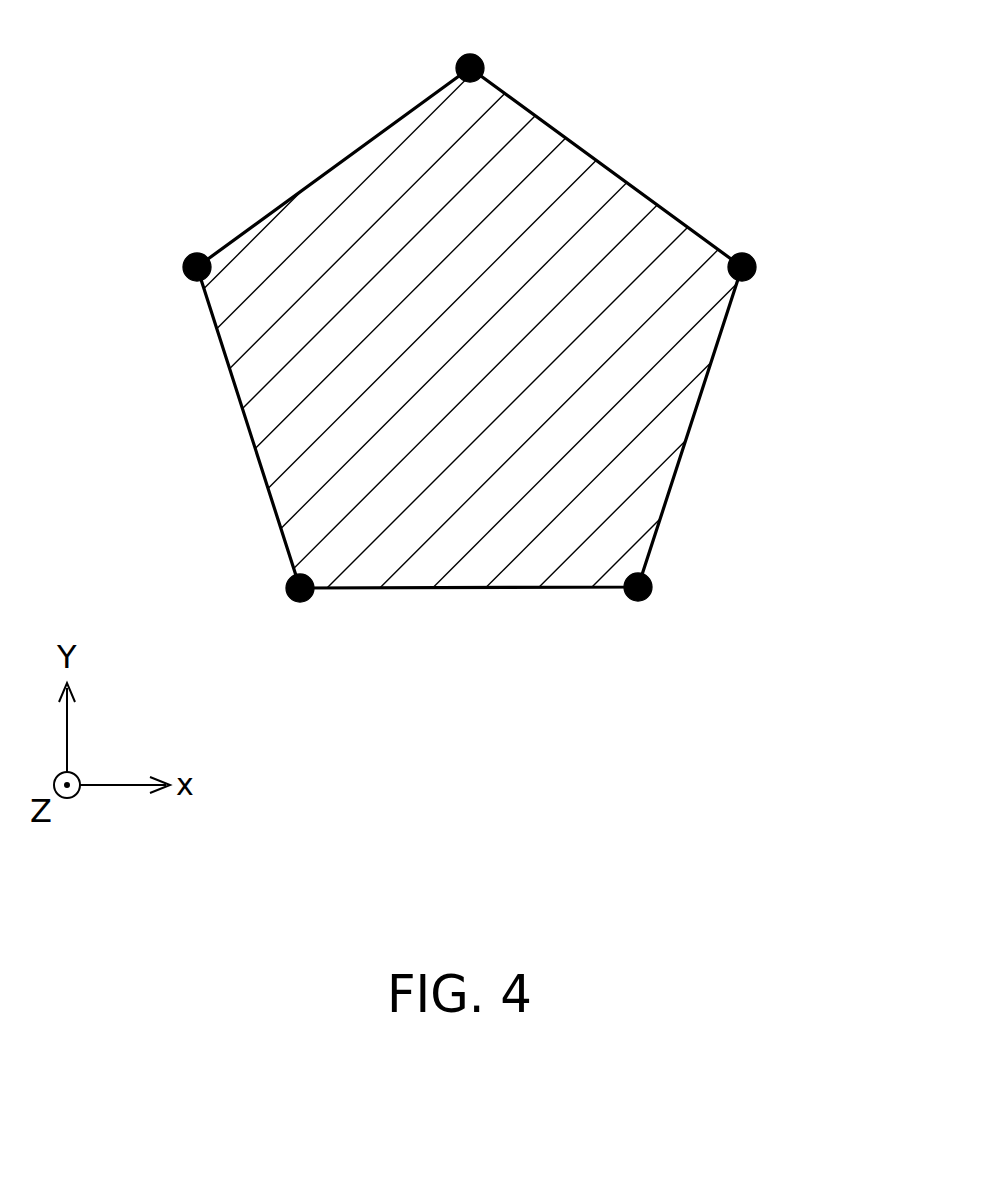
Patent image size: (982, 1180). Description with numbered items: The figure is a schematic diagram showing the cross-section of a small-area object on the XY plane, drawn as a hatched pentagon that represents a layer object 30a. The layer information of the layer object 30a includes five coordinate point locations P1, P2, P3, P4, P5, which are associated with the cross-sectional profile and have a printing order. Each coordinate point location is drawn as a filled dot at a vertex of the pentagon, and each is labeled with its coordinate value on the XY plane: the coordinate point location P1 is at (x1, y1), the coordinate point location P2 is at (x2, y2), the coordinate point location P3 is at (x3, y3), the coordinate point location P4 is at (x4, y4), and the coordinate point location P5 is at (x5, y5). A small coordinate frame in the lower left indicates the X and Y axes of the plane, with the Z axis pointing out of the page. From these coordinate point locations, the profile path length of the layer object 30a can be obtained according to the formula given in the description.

The layer object 30a is at (870, 805).
The coordinate point location P1 is at (470, 53).
The coordinate point location P2 is at (195, 253).
The coordinate point location P3 is at (295, 605).
The coordinate point location P4 is at (643, 605).
The coordinate point location P5 is at (745, 253).